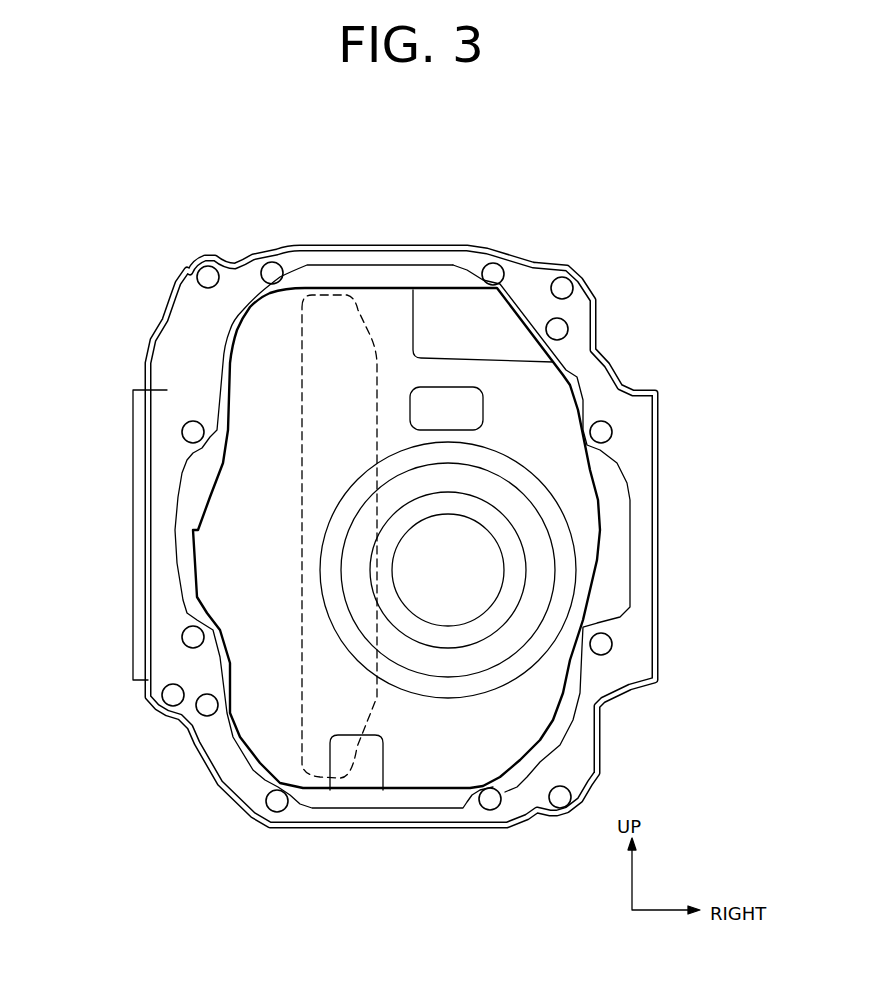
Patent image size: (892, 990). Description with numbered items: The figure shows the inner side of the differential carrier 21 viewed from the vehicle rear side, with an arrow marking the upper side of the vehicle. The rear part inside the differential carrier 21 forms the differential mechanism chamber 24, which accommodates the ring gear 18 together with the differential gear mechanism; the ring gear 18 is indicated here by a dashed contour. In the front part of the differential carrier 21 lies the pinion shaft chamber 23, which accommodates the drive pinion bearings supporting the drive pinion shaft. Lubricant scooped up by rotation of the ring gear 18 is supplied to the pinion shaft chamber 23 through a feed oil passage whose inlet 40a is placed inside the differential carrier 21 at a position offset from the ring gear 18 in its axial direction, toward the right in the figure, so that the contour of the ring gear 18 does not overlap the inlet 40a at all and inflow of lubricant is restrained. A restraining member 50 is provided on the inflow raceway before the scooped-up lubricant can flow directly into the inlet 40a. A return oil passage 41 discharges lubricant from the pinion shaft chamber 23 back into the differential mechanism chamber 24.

The differential carrier 21 is at (300, 250).
The restraining member 50 is at (437, 320).
The inlet 40a is at (458, 412).
The differential mechanism chamber 24 is at (250, 530).
The ring gear 18 is at (318, 705).
The return oil passage 41 is at (352, 770).
The pinion shaft chamber 23 is at (452, 655).